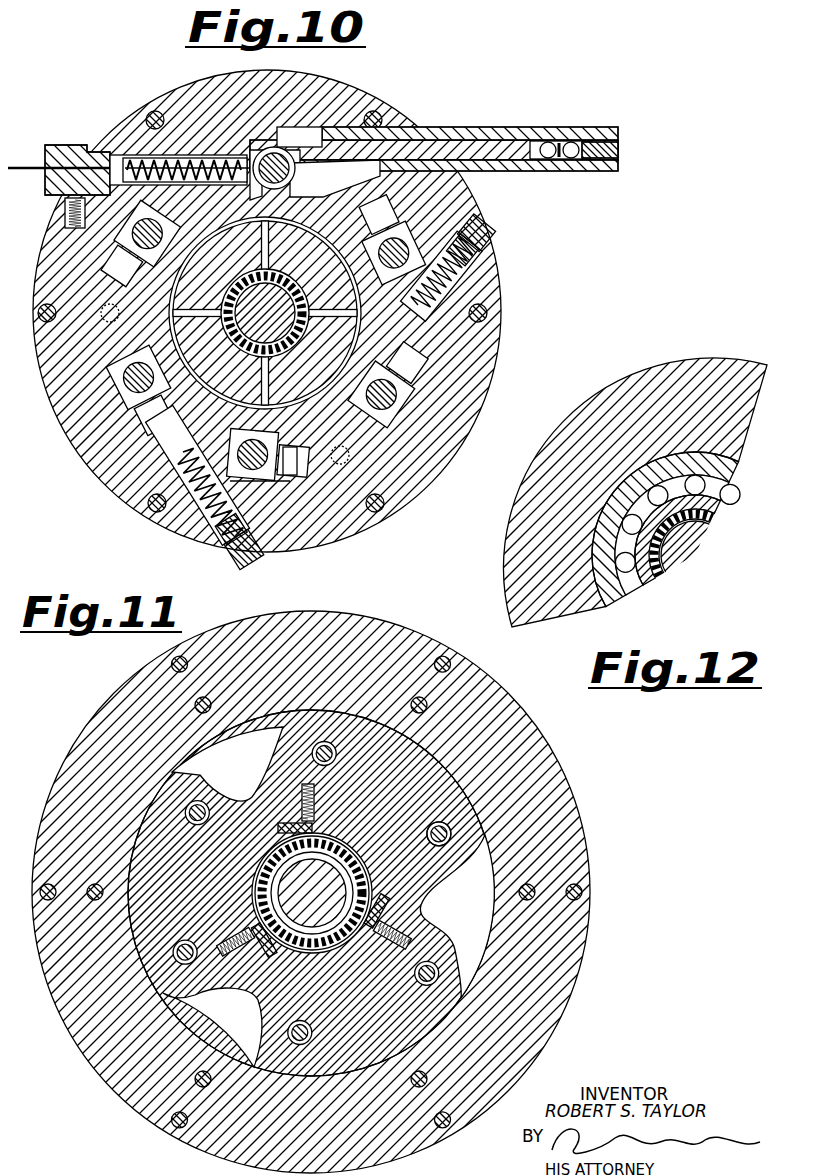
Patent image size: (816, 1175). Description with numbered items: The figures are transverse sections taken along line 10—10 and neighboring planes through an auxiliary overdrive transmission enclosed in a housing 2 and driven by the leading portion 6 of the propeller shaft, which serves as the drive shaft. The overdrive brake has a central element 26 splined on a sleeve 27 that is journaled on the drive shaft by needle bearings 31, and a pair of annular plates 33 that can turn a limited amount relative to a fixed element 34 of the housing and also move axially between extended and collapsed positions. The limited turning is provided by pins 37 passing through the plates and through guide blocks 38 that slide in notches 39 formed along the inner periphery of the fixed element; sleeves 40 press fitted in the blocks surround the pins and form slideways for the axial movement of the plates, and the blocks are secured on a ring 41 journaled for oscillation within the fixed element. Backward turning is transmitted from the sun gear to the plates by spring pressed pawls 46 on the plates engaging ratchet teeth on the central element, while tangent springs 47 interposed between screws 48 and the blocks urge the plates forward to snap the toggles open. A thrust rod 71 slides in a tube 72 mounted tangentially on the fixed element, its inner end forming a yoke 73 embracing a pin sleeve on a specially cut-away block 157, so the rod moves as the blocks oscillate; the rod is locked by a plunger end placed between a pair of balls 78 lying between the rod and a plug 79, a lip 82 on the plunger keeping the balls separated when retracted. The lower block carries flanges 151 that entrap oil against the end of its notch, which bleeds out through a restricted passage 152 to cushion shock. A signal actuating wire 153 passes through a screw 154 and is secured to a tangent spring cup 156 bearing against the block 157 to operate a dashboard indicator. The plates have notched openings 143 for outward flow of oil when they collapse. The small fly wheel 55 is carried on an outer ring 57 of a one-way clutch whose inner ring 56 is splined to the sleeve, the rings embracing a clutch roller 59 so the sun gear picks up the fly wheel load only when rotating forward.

In FIG. 11, the housing 2 is at (505, 691).
In FIG. 11, the drive shaft 6 is at (330, 888).
In FIG. 12, the drive shaft 6 is at (696, 566).
In FIG. 11, the clutch assembly 10 is at (452, 822).
In FIG. 10, the central brake element 26 is at (355, 338).
In FIG. 11, the central brake element 26 is at (348, 848).
In FIG. 10, the sleeve 27 is at (290, 266).
In FIG. 11, the sleeve 27 is at (352, 868).
In FIG. 12, the sleeve 27 is at (662, 590).
In FIG. 12, the needle bearings 31 is at (714, 544).
In FIG. 11, the annular brake plates 33 is at (445, 800).
In FIG. 10, the fixed element 34 is at (488, 354).
In FIG. 10, the pins 37 is at (266, 162).
In FIG. 11, the pins 37 is at (450, 838).
In FIG. 10, the guide blocks 38 is at (398, 224).
In FIG. 10, the notches 39 is at (381, 206).
In FIG. 10, the sleeves 40 is at (274, 155).
In FIG. 10, the ring 41 is at (148, 278).
In FIG. 11, the spring pressed pawls 46 is at (316, 826).
In FIG. 10, the tangent springs 47 is at (456, 290).
In FIG. 10, the screws 48 is at (490, 237).
In FIG. 12, the fly wheel 55 is at (508, 540).
In FIG. 12, the inner clutch ring 56 is at (728, 515).
In FIG. 12, the outer clutch ring 57 is at (740, 472).
In FIG. 12, the clutch roller 59 is at (745, 492).
In FIG. 10, the thrust rod 71 is at (440, 148).
In FIG. 10, the tube 72 is at (492, 135).
In FIG. 10, the yoke 73 is at (292, 150).
In FIG. 10, the balls 78 is at (552, 158).
In FIG. 10, the plug 79 is at (619, 150).
In FIG. 10, the lip 82 is at (559, 143).
In FIG. 11, the notched openings 143 is at (475, 890).
In FIG. 10, the flanges 151 is at (293, 460).
In FIG. 10, the restricted passage 152 is at (268, 483).
In FIG. 10, the signal actuating wire 153 is at (30, 158).
In FIG. 10, the screw 154 is at (64, 152).
In FIG. 10, the tangent spring cup 156 is at (195, 155).
In FIG. 10, the block 157 is at (284, 180).